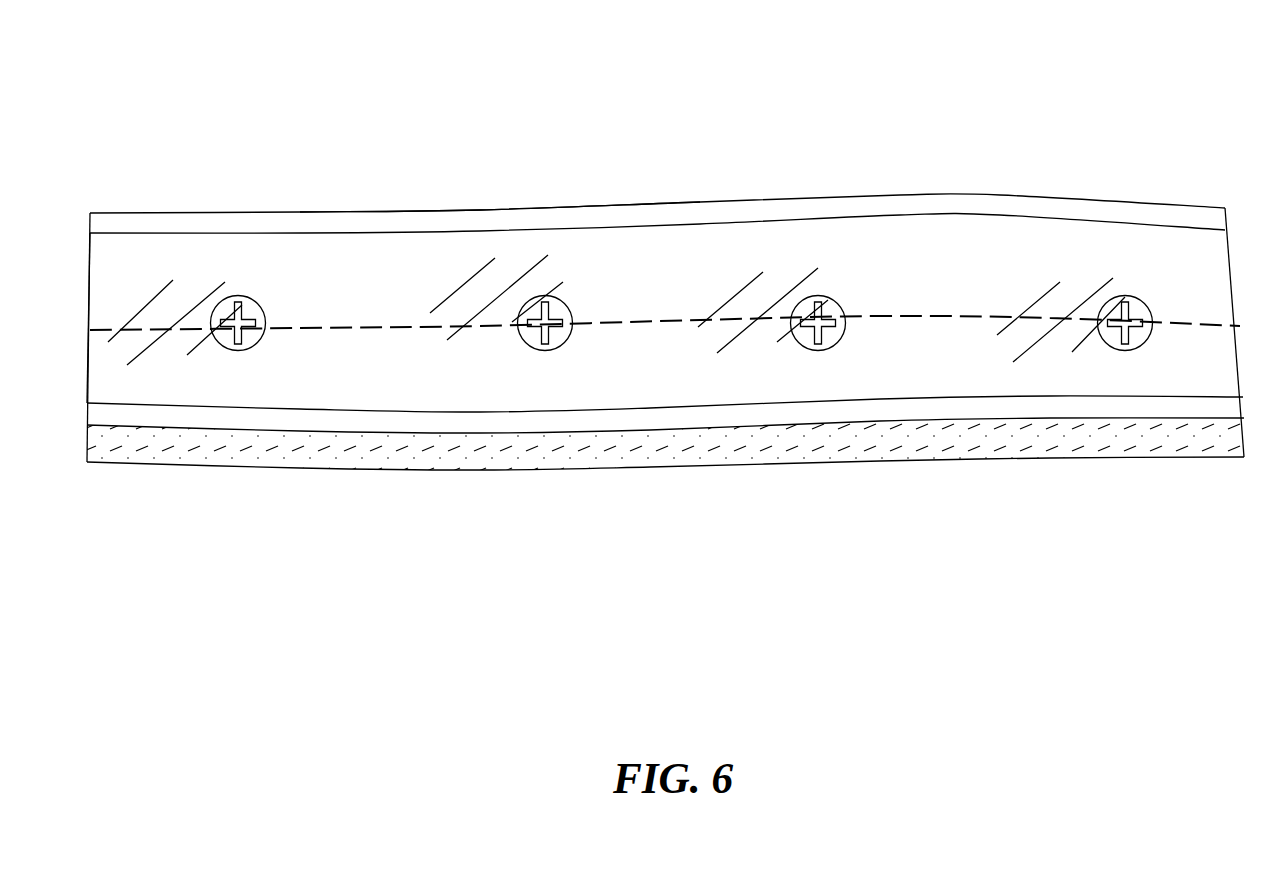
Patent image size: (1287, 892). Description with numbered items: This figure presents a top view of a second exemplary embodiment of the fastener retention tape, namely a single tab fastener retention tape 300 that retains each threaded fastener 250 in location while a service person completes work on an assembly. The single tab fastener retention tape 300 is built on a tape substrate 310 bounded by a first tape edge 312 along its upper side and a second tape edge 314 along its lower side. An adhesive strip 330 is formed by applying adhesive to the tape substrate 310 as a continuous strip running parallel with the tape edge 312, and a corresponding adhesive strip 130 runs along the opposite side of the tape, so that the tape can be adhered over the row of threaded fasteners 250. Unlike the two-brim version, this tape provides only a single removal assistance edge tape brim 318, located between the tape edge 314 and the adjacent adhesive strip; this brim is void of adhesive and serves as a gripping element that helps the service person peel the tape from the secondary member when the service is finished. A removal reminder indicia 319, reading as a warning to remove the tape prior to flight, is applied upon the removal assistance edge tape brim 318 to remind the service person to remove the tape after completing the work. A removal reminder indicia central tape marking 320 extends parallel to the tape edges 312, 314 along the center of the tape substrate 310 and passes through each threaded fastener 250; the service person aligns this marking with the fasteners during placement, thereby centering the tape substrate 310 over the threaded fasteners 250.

The single tab fastener retention tape 300 is at (387, 134).
The tape substrate 310 is at (332, 281).
The tape edge 312 is at (952, 195).
The tape edge 314 is at (953, 460).
The removal assistance edge tape brim 318 is at (293, 465).
The removal reminder indicia 319 is at (473, 458).
The removal reminder indicia central tape marking 320 is at (912, 315).
The adhesive strip 330 is at (508, 225).
The threaded fastener 250 is at (262, 340).
The adhesive strip 130 is at (508, 421).